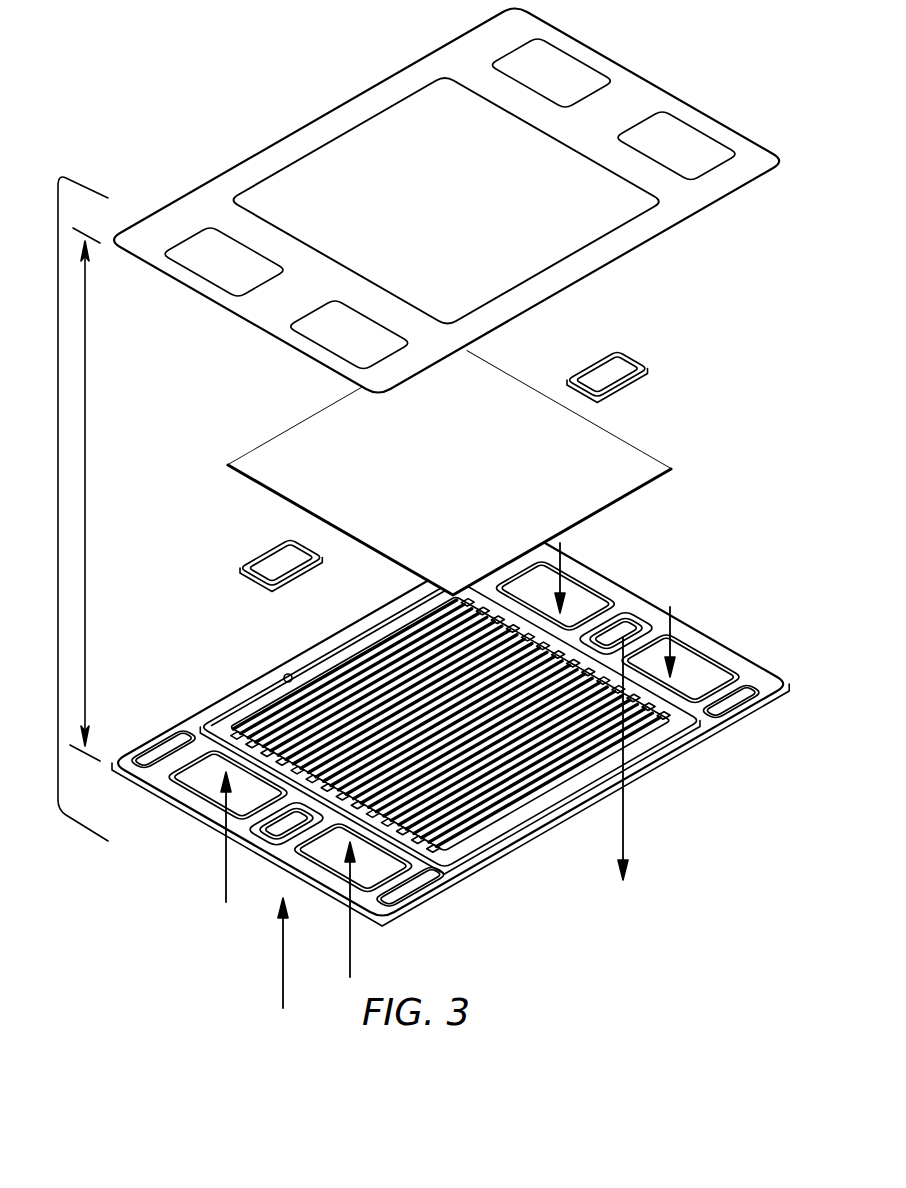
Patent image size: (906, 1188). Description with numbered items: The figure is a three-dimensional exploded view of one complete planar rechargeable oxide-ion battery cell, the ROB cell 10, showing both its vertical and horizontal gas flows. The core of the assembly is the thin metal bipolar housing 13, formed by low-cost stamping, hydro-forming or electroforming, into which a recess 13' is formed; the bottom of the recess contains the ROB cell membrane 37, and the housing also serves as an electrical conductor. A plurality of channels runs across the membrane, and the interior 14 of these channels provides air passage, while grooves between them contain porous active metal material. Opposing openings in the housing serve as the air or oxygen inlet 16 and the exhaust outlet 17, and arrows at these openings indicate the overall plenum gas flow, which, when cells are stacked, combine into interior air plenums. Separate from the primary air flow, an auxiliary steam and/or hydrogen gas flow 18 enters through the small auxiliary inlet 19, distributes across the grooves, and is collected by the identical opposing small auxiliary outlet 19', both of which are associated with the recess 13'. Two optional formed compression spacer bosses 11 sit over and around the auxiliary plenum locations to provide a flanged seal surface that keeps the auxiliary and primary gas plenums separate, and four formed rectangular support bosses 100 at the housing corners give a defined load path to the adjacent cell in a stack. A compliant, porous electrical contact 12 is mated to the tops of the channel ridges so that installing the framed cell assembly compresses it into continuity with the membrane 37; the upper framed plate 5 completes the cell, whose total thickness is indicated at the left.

The end plate 5 is at (679, 106).
The ROB cell 10 is at (63, 509).
The compression spacer bosses 11 is at (637, 360).
The electrical contact 12 is at (617, 463).
The metal bipolar housing 13 is at (454, 726).
The recess 13' is at (285, 642).
The interior of the channels 14 is at (493, 800).
The air inlet 16 is at (222, 868).
The air exhaust outlet 17 is at (573, 585).
The auxiliary gas flow 18 is at (627, 826).
The small auxiliary inlet 19 is at (261, 597).
The small auxiliary outlet 19' is at (633, 331).
The ROB cell membrane 37 is at (377, 635).
The support bosses 100 is at (733, 695).